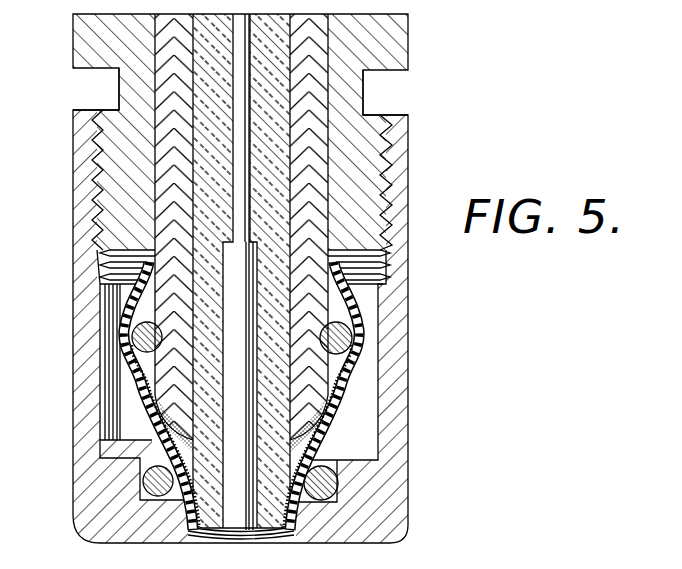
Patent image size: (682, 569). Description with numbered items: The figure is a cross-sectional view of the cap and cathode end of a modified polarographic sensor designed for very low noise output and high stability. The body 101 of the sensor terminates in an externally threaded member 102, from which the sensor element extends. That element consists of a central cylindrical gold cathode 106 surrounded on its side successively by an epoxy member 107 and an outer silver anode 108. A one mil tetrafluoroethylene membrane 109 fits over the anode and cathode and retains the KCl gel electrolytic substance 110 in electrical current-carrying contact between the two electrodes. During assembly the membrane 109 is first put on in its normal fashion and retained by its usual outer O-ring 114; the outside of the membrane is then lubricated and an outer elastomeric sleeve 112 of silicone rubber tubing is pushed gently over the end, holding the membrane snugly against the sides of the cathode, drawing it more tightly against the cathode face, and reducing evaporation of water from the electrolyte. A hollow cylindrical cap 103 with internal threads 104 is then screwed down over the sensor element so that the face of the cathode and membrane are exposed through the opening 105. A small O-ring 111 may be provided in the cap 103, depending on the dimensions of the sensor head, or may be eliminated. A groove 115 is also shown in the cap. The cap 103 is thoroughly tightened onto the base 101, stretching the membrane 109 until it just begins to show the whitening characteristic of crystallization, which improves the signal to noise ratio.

The body 101 is at (400, 46).
The externally threaded member 102 is at (380, 243).
The hollow cylindrical cap 103 is at (386, 535).
The internal threads 104 is at (372, 173).
The opening 105 is at (286, 534).
The central cylindrical gold cathode 106 is at (236, 532).
The epoxy member 107 is at (187, 540).
The outer silver anode 108 is at (318, 397).
The tetrafluoroethylene membrane 109 is at (247, 536).
The KCl gel electrolytic substance 110 is at (140, 442).
The small O-ring 111 is at (338, 490).
The outer elastomeric sleeve 112 is at (330, 437).
The outer O-ring 114 is at (352, 338).
The groove 115 is at (412, 93).